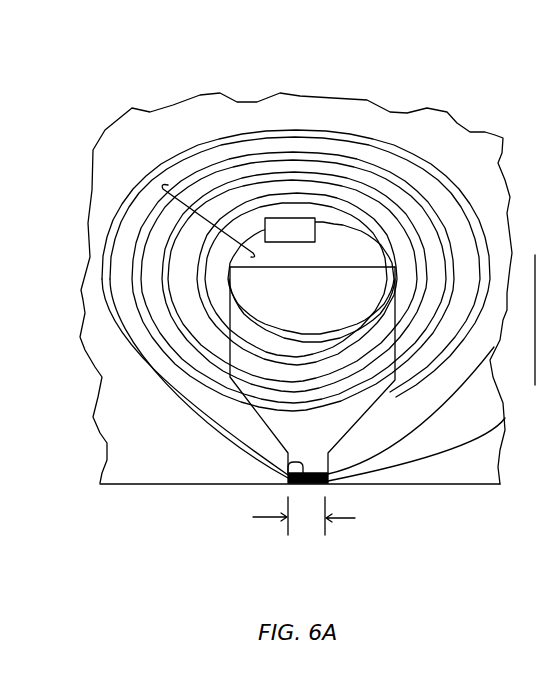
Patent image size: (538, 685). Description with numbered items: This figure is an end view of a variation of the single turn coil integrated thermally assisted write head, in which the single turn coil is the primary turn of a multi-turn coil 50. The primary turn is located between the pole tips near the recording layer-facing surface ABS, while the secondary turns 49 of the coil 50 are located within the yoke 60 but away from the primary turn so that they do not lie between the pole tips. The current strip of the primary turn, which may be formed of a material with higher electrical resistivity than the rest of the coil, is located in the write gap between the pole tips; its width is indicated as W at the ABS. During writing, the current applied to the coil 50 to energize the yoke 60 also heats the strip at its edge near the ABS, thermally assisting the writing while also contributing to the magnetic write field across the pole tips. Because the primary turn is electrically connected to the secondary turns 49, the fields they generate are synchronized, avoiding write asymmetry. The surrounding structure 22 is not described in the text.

The substrate 22 is at (133, 453).
The multi-turn coil 50 is at (338, 130).
The secondary turns 49 is at (217, 213).
The yoke 60 is at (415, 436).
The recording layer-facing surface ABS is at (421, 486).
The pole tip width W is at (304, 516).